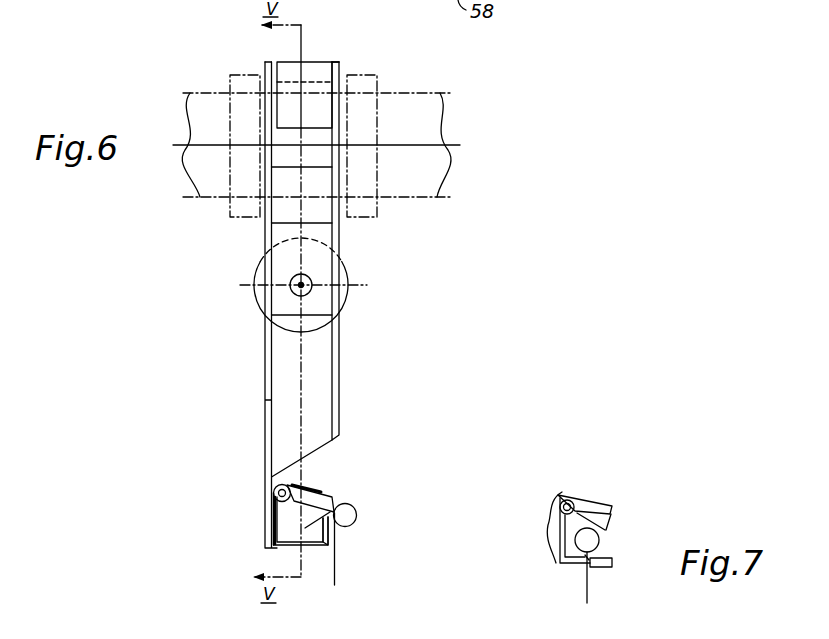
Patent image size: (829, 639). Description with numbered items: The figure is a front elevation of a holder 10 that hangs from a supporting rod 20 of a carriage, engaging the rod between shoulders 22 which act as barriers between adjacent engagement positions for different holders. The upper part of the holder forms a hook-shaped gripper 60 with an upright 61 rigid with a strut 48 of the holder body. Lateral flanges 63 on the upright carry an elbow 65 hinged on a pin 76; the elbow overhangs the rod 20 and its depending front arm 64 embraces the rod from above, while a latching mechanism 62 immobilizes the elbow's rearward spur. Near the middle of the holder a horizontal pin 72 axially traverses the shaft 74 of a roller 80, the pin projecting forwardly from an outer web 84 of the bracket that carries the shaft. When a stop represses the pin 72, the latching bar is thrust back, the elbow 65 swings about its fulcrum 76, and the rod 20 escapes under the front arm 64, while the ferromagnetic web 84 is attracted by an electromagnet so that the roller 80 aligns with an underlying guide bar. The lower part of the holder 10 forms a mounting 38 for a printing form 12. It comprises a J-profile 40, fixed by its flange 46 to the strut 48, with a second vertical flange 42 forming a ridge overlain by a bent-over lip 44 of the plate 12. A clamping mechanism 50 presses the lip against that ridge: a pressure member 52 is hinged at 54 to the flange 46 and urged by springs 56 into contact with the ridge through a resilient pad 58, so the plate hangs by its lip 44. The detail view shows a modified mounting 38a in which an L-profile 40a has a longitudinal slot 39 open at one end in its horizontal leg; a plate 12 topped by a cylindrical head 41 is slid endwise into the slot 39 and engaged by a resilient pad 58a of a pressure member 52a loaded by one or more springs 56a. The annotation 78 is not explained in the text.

In FIG. 6, the holder 10 is at (499, 321).
In FIG. 6, the printing form 12 is at (336, 582).
In FIG. 7, the printing form 12 is at (585, 592).
In FIG. 6, the supporting rod 20 is at (413, 95).
In FIG. 6, the shoulders 22 is at (229, 76).
In FIG. 6, the mounting 38 is at (367, 509).
In FIG. 7, the modified mounting 38a is at (618, 459).
In FIG. 7, the longitudinal slot 39 is at (589, 567).
In FIG. 6, the J-profile 40 is at (287, 543).
In FIG. 7, the L-profile 40a is at (613, 563).
In FIG. 7, the cylindrical head 41 is at (599, 541).
In FIG. 6, the flange 42 is at (330, 532).
In FIG. 6, the bent-over lip 44 is at (305, 528).
In FIG. 6, the flange 46 is at (275, 523).
In FIG. 6, the strut 48 is at (265, 363).
In FIG. 6, the clamping mechanism 50 is at (331, 446).
In FIG. 6, the pressure member 52 is at (324, 478).
In FIG. 7, the pressure member 52a is at (615, 509).
In FIG. 6, the hinge 54 is at (276, 492).
In FIG. 6, the springs 56 is at (271, 510).
In FIG. 7, the springs 56a is at (583, 492).
In FIG. 6, the resilient pad 58 is at (348, 509).
In FIG. 7, the resilient pad 58a is at (611, 522).
In FIG. 6, the hook-shaped gripper 60 is at (216, 220).
In FIG. 6, the upright 61 is at (323, 388).
In FIG. 6, the latching mechanism 62 is at (238, 43).
In FIG. 6, the lateral flanges 63 is at (272, 167).
In FIG. 6, the front arm 64 is at (288, 113).
In FIG. 6, the elbow 65 is at (316, 62).
In FIG. 6, the horizontal pin 72 is at (298, 290).
In FIG. 6, the roller shaft 74 is at (296, 281).
In FIG. 6, the pin 76 is at (348, 78).
In FIG. 6, the wheel centerline 78 is at (243, 297).
In FIG. 6, the roller 80 is at (346, 300).
In FIG. 6, the outer web 84 is at (320, 263).